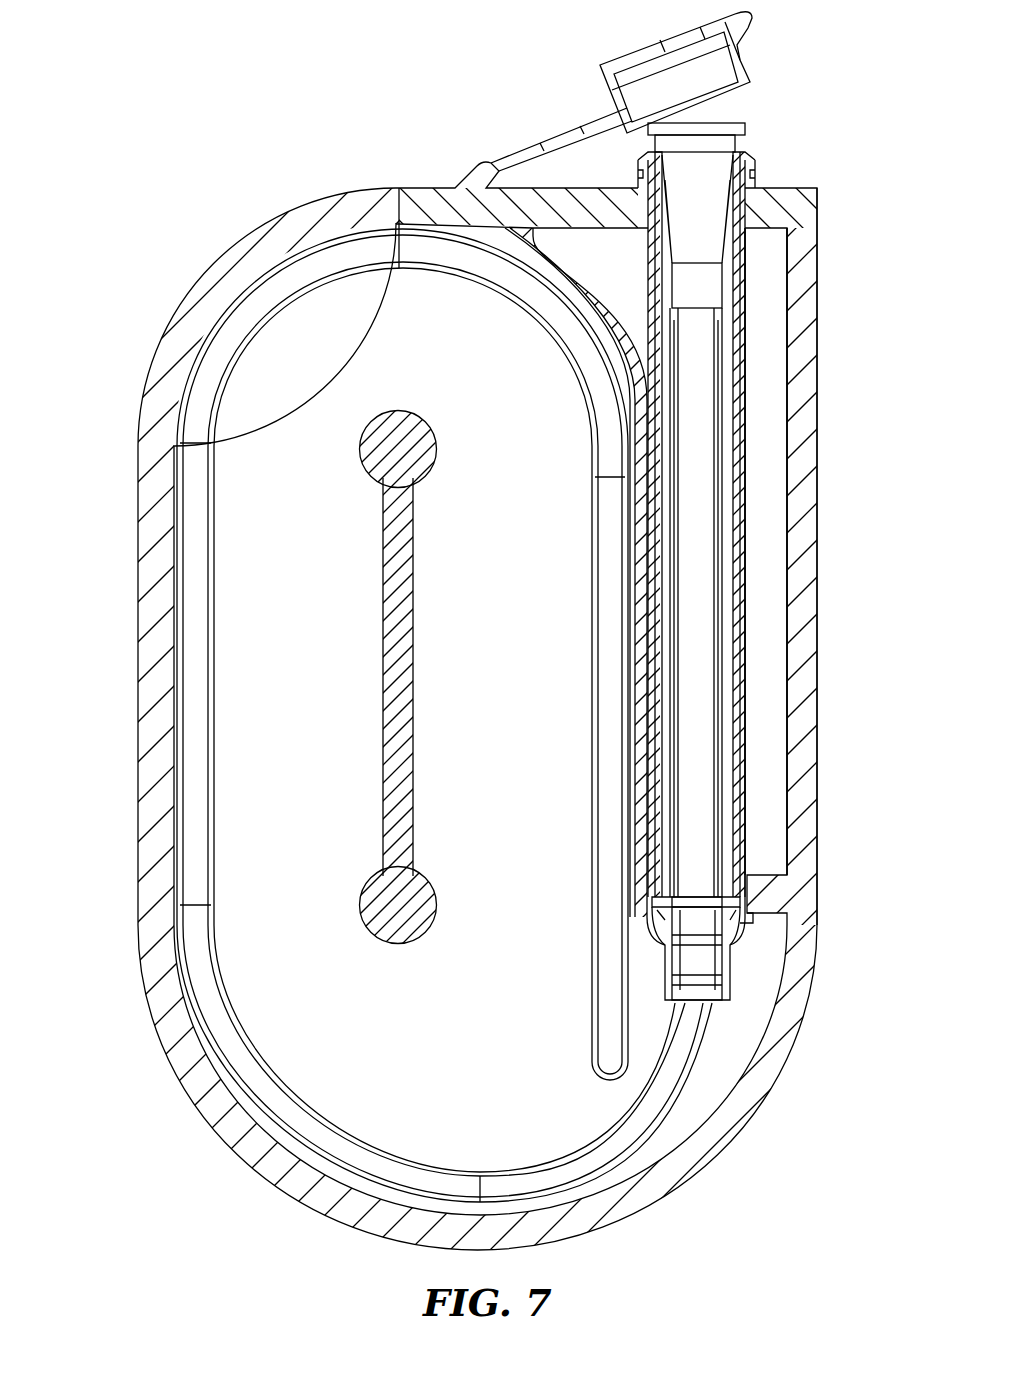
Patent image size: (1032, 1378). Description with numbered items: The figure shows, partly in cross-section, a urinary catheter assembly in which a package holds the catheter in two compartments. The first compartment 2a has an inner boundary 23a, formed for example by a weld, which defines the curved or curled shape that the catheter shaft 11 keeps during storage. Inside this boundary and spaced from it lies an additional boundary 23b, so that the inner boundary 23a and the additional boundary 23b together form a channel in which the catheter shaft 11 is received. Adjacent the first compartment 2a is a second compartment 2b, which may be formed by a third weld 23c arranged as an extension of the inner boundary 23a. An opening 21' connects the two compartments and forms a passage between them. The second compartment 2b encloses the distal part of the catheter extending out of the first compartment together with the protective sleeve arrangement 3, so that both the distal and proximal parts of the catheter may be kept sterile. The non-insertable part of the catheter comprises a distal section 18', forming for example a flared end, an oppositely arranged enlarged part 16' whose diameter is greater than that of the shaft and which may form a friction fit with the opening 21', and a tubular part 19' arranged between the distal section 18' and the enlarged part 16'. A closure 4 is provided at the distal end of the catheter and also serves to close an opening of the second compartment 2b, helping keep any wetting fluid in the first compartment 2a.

The closure 4 is at (745, 72).
The distal section 18' is at (747, 227).
The second compartment 2b is at (765, 360).
The third weld 23c is at (800, 585).
The protective sleeve arrangement 3 is at (740, 600).
The tubular part 19' is at (780, 602).
The inner boundary 23a is at (155, 605).
The additional boundary 23b is at (380, 688).
The first compartment 2a is at (245, 903).
The catheter shaft 11 is at (245, 1060).
The opening 21' is at (766, 954).
The enlarged part 16' is at (775, 979).